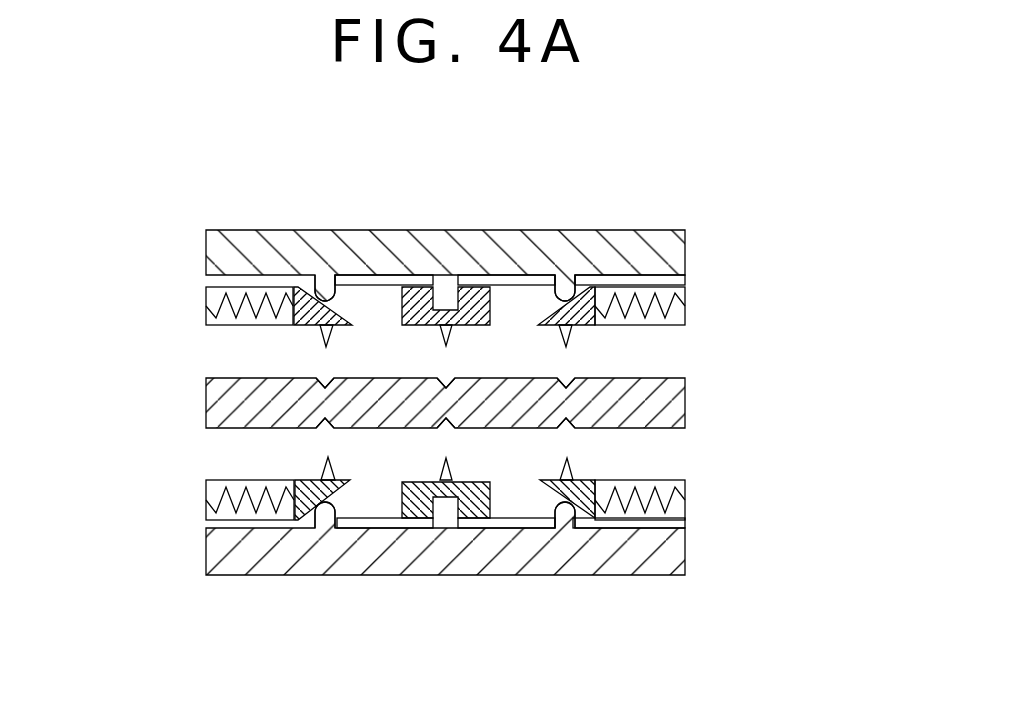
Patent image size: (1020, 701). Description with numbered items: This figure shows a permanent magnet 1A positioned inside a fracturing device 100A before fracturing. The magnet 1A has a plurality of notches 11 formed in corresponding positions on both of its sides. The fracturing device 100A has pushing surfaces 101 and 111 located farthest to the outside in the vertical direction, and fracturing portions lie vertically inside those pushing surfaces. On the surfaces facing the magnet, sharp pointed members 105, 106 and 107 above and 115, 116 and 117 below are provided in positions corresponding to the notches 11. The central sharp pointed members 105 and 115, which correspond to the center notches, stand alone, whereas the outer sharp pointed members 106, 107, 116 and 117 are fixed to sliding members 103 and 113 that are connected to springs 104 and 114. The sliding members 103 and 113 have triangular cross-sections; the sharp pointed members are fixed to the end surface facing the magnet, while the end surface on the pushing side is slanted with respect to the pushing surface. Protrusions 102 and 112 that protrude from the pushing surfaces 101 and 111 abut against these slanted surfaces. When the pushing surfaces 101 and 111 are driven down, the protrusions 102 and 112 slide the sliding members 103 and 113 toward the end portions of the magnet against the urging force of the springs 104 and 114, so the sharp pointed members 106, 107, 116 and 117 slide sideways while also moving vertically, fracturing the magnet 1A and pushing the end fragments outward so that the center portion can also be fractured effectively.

The fracturing device 100A is at (187, 278).
The pushing surface 101 is at (645, 255).
The protrusion 102 is at (325, 297).
The sliding member 103 is at (302, 292).
The spring 104 is at (208, 300).
The sharp pointed member 105 is at (452, 338).
The sharp pointed member 106 is at (331, 333).
The sharp pointed member 107 is at (578, 342).
The notch 11 is at (322, 377).
The permanent magnet 1A is at (697, 400).
The pushing surface 111 is at (657, 557).
The protrusion 112 is at (327, 517).
The sliding member 113 is at (320, 515).
The spring 114 is at (210, 497).
The sharp pointed member 115 is at (437, 468).
The sharp pointed member 116 is at (322, 470).
The sharp pointed member 117 is at (555, 465).